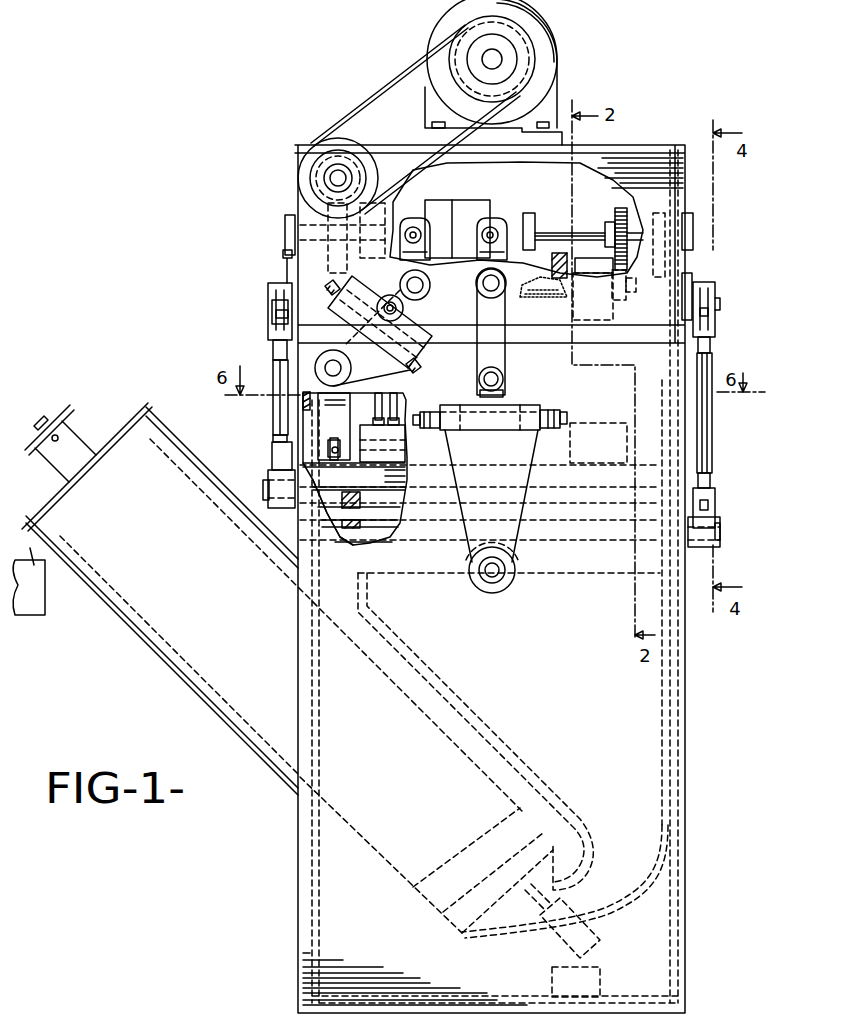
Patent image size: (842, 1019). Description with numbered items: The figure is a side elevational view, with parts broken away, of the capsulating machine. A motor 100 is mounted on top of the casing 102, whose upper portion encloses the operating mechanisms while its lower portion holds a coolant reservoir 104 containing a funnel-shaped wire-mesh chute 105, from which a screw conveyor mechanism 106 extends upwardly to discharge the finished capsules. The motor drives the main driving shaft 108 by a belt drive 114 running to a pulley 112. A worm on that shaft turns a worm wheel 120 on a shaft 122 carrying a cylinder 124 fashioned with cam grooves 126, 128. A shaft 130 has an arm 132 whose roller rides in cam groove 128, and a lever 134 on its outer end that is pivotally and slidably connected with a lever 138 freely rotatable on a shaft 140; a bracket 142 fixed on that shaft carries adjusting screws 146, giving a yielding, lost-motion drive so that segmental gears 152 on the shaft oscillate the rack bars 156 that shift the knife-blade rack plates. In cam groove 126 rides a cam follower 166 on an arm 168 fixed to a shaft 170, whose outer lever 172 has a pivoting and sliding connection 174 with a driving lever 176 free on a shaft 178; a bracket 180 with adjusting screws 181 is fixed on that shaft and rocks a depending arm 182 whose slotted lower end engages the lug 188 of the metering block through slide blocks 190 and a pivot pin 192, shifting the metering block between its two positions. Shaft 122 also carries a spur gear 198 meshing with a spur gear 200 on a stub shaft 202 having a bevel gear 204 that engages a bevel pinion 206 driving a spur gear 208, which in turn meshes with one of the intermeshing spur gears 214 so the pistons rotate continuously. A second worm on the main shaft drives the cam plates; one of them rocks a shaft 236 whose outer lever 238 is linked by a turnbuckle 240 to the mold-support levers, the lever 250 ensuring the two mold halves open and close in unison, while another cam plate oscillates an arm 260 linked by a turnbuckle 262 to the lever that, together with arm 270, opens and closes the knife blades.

The motor 100 is at (549, 47).
The casing 102 is at (690, 746).
The coolant reservoir 104 is at (668, 688).
The chute 105 is at (637, 834).
The conveyor mechanism 106 is at (197, 690).
The main driving shaft 108 is at (338, 178).
The pulley 112 is at (318, 148).
The belt drive 114 is at (399, 79).
The worm wheel 120 is at (330, 269).
The shaft 122 is at (543, 228).
The cylinder 124 is at (472, 200).
The cam groove 126 is at (410, 220).
The cam groove 128 is at (490, 220).
The shaft 130 is at (430, 285).
The arm 132 is at (497, 232).
The lever 134 is at (505, 333).
The lever 138 is at (505, 383).
The shaft 140 is at (492, 580).
The bracket 142 is at (530, 405).
The adjusting screws 146 is at (568, 415).
The segmental gears 152 is at (512, 540).
The bars 156 is at (335, 515).
The cam follower 166 is at (421, 230).
The arm 168 is at (423, 238).
The shaft 170 is at (420, 288).
The lever 172 is at (403, 304).
The pivoting and sliding connection 174 is at (390, 300).
The driving lever 176 is at (371, 378).
The shaft 178 is at (340, 362).
The bracket 180 is at (414, 354).
The adjusting screws 181 is at (326, 290).
The arm 182 is at (320, 418).
The lug 188 is at (350, 446).
The slide blocks 190 is at (340, 452).
The pivot pin 192 is at (333, 463).
The spur gear 198 is at (622, 210).
The spur gear 200 is at (618, 306).
The stub shaft 202 is at (616, 292).
The bevel gear 204 is at (558, 262).
The bevel pinion 206 is at (548, 296).
The spur gear 208 is at (570, 315).
The spur gear 214 is at (430, 300).
The shaft 236 is at (268, 300).
The lever 238 is at (283, 283).
The turnbuckle 240 is at (273, 412).
The lever 250 is at (268, 478).
The arm 260 is at (712, 290).
The turnbuckle 262 is at (712, 362).
The arm 270 is at (720, 522).